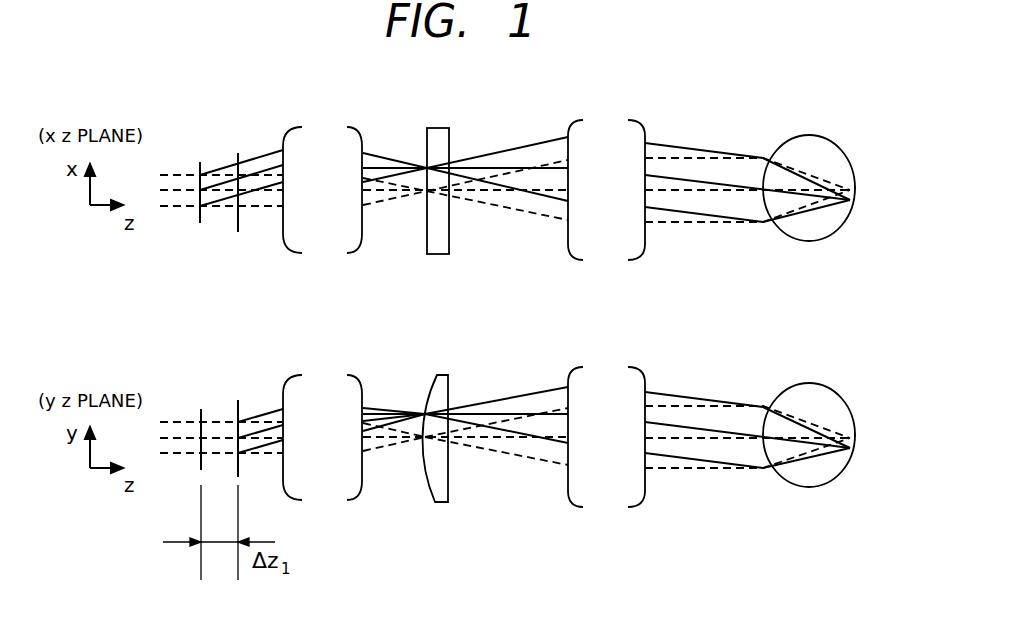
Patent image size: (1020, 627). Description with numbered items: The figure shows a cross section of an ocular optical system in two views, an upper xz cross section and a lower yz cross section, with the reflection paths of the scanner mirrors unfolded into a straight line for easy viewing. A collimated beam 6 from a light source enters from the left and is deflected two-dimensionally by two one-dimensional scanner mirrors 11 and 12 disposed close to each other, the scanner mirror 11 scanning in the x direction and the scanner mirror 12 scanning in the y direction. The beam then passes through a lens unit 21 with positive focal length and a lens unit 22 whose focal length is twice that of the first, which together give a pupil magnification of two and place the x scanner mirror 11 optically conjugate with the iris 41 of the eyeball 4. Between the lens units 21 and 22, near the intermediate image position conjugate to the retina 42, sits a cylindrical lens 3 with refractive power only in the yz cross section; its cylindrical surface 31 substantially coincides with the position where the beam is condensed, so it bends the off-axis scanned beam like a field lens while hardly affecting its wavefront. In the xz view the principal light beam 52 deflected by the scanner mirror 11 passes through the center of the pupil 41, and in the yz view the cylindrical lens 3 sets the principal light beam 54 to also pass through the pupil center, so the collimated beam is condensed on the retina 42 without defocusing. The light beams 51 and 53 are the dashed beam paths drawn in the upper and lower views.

The beam 6 is at (177, 175).
The x scanner mirror 11 is at (188, 217).
The y scanner mirror 12 is at (250, 217).
The lens unit 21 is at (322, 237).
The lens unit 22 is at (607, 237).
The cylindrical lens 3 is at (435, 253).
The cylindrical surface 31 is at (420, 217).
The eyeball 4 is at (797, 288).
The iris 41 is at (767, 227).
The retina 42 is at (853, 217).
The first light beam 51 is at (698, 192).
The principal light beam 52 is at (677, 178).
The third light beam 53 is at (680, 438).
The principal light beam 54 is at (677, 427).